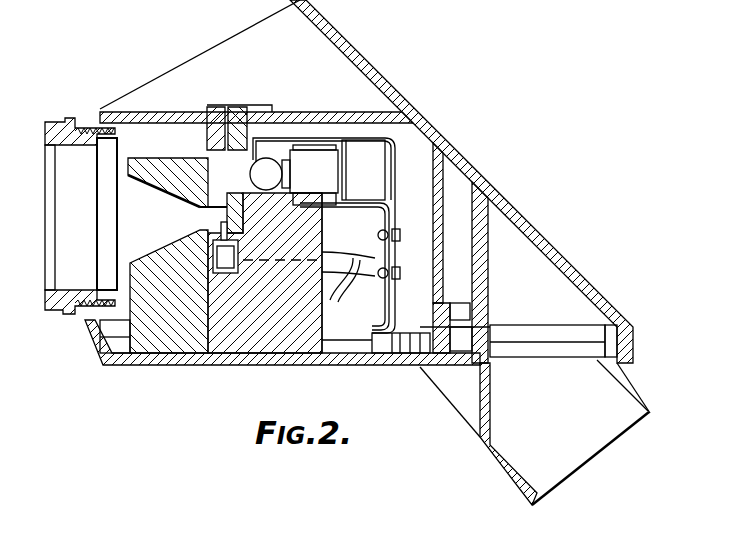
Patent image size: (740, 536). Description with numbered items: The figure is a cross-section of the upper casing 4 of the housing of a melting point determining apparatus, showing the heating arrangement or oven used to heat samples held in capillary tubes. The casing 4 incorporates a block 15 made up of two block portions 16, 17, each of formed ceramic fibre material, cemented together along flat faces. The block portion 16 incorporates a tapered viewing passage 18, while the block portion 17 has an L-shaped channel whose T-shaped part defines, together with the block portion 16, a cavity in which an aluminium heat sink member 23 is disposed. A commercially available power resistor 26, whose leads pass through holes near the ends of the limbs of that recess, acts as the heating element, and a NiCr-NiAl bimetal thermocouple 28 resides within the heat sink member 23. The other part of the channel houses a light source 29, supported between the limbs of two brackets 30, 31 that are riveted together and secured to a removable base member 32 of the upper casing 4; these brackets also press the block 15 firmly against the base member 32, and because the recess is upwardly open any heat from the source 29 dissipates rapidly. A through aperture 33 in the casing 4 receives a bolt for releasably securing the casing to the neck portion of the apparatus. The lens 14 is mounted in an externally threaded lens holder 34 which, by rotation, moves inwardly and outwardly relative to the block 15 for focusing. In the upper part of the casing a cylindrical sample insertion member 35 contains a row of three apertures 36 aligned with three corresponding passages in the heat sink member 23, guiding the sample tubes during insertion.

The upper casing 4 is at (221, 368).
The lens 14 is at (103, 164).
The block 15 is at (255, 335).
The block portion 16 is at (165, 318).
The block portion 17 is at (296, 328).
The tapered viewing passage 18 is at (148, 205).
The heat sink member 23 is at (236, 202).
The power resistor 26 is at (225, 262).
The bimetal thermocouple 28 is at (348, 286).
The light source 29 is at (267, 162).
The bracket 30 is at (357, 136).
The bracket 31 is at (372, 200).
The removable base member 32 is at (100, 350).
The through aperture 33 is at (464, 172).
The lens holder 34 is at (62, 121).
The sample insertion member 35 is at (214, 108).
The apertures 36 is at (233, 107).